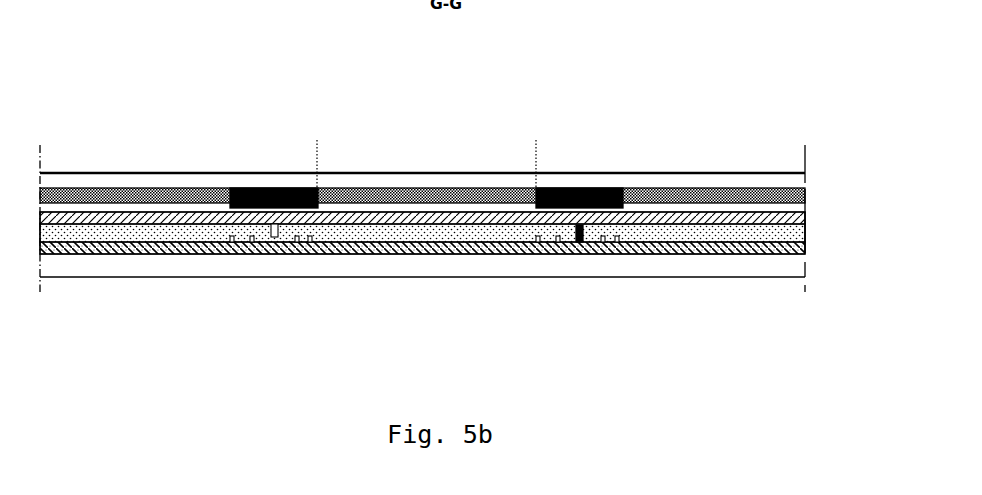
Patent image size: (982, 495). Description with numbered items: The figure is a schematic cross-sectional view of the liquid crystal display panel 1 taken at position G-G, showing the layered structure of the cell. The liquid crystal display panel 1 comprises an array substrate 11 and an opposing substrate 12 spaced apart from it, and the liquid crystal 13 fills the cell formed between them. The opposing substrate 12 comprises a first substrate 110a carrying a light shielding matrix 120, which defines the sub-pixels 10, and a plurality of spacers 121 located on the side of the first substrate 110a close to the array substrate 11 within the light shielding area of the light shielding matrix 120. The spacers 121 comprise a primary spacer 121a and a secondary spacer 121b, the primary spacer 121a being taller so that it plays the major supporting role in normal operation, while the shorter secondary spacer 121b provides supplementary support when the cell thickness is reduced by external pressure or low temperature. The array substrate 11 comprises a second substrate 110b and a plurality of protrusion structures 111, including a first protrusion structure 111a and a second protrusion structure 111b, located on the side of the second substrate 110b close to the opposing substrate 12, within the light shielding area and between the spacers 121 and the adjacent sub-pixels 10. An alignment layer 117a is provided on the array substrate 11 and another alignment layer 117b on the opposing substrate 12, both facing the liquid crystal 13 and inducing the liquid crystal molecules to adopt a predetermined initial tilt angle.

The liquid crystal display panel 1 is at (575, 120).
The sub-pixel 10 is at (425, 155).
The array substrate 11 is at (466, 284).
The opposing substrate 12 is at (807, 202).
The liquid crystal 13 is at (425, 235).
The first substrate 110a is at (687, 183).
The second substrate 110b is at (467, 267).
The protrusion structures 111 is at (364, 304).
The first protrusion structure 111a is at (255, 253).
The second protrusion structure 111b is at (232, 253).
The alignment layer 117a is at (660, 242).
The alignment layer 117b is at (733, 215).
The light shielding matrix 120 is at (270, 188).
The spacers 121 is at (416, 280).
The primary spacer 121a is at (581, 243).
The secondary spacer 121b is at (283, 253).